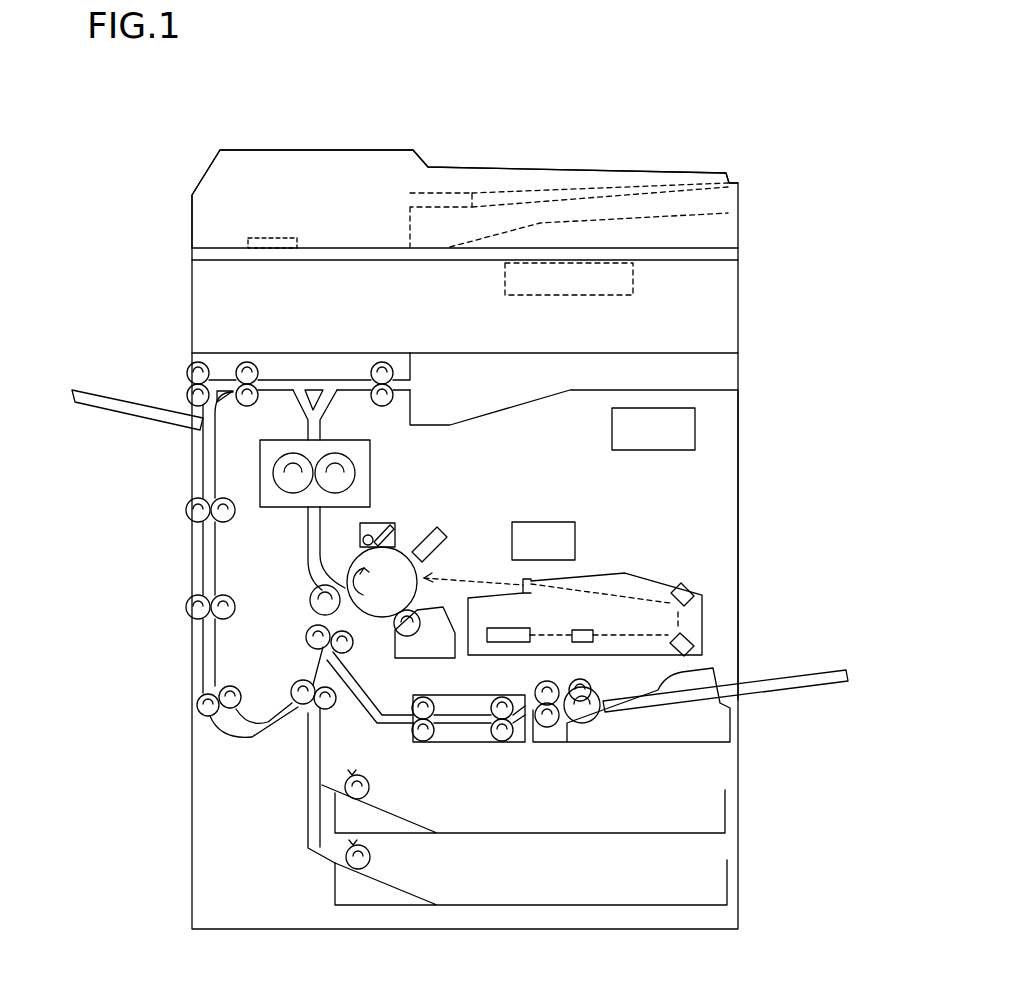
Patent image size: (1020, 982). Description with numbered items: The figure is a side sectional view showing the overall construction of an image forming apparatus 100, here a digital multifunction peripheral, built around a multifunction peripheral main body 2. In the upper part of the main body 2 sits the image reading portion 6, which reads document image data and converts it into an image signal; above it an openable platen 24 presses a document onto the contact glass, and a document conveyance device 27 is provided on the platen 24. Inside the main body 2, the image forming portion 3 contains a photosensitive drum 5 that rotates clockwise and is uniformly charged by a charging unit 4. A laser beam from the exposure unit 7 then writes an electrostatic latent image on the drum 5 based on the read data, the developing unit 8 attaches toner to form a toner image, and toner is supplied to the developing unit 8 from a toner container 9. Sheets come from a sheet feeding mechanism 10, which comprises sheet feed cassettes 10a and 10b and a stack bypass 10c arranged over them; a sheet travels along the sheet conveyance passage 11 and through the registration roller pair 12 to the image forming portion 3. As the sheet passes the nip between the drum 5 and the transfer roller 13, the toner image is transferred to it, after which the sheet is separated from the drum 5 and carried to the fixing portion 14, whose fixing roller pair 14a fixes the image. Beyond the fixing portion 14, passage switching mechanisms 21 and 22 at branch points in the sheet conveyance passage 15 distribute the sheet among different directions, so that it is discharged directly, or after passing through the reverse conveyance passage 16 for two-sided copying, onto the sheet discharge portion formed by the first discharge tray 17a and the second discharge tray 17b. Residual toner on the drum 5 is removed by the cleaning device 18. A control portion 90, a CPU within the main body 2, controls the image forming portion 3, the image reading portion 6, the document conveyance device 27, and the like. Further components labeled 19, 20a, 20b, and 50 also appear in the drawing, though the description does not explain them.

The image forming apparatus 100 is at (658, 140).
The document conveyance device 27 is at (227, 180).
The sensor 50 is at (278, 237).
The platen 24 is at (740, 262).
The image reading portion 6 is at (203, 313).
The discharge roller pair 20b is at (187, 382).
The conveyance roller pair 19 is at (252, 360).
The discharge roller pair 20a is at (386, 360).
The passage switching mechanism 21 is at (313, 388).
The passage switching mechanism 22 is at (200, 408).
The second discharge tray 17b is at (113, 402).
The sheet conveyance passage 15 is at (305, 422).
The fixing portion 14 is at (253, 470).
The fixing roller pair 14a is at (353, 465).
The first discharge tray 17a is at (574, 399).
The control portion 90 is at (695, 425).
The multifunction peripheral main body 2 is at (738, 487).
The image forming portion 3 is at (428, 507).
The cleaning device 18 is at (375, 523).
The charging unit 4 is at (437, 542).
The toner container 9 is at (545, 530).
The exposure unit 7 is at (610, 580).
The reverse conveyance passage 16 is at (208, 547).
The transfer roller 13 is at (312, 603).
The registration roller pair 12 is at (300, 660).
The photosensitive drum 5 is at (372, 608).
The developing unit 8 is at (425, 647).
The sheet conveyance passage 11 is at (312, 737).
The sheet feeding mechanism 10 is at (757, 767).
The stack bypass 10c is at (763, 673).
The sheet feed cassette 10a is at (710, 817).
The sheet feed cassette 10b is at (717, 888).